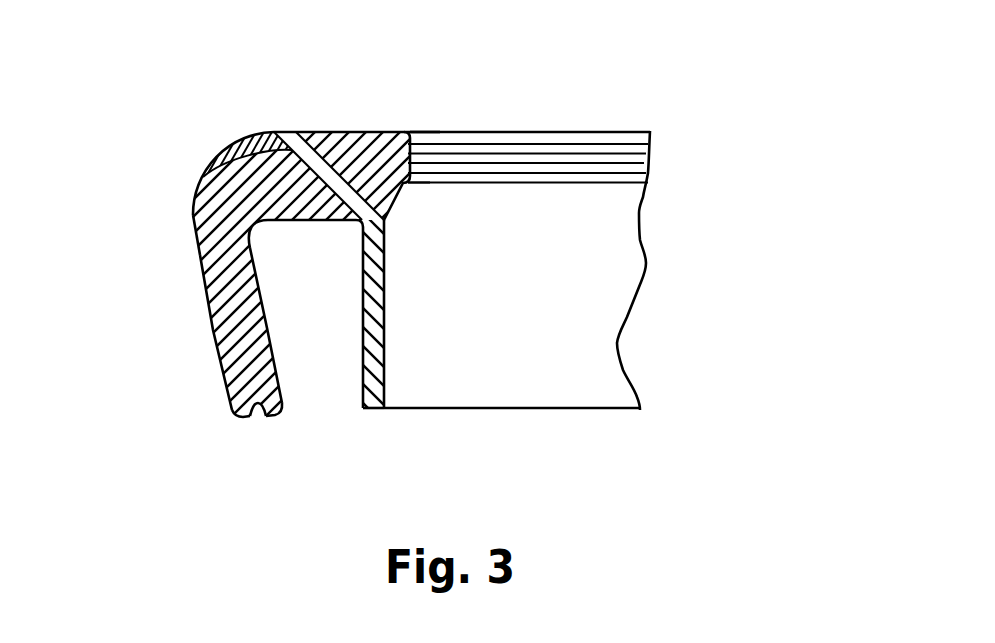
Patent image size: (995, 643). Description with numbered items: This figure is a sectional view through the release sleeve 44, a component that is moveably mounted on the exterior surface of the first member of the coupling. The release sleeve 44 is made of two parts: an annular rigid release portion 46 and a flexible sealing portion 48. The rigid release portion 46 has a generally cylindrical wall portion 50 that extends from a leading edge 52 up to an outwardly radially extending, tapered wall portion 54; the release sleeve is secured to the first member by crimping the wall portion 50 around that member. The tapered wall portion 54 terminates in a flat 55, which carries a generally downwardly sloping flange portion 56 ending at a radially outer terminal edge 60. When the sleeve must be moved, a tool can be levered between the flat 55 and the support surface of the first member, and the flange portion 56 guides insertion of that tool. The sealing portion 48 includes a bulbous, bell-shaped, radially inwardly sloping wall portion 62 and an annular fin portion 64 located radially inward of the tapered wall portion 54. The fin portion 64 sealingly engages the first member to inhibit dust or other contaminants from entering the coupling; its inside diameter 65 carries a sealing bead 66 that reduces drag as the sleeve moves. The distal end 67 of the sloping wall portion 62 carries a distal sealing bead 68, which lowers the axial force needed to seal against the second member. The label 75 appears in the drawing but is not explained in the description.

The release sleeve 44 is at (540, 100).
The rigid release portion 46 is at (390, 287).
The sealing portion 48 is at (190, 194).
The wall portion 50 is at (363, 323).
The leading edge 52 is at (373, 409).
The tapered wall portion 54 is at (338, 155).
The flat 55 is at (286, 131).
The flange portion 56 is at (242, 157).
The terminal edge 60 is at (203, 175).
The inwardly sloping wall portion 62 is at (223, 288).
The fin portion 64 is at (378, 145).
The inside diameter 65 is at (420, 158).
The sealing bead 66 is at (428, 133).
The distal end 67 is at (257, 404).
The distal sealing bead 68 is at (242, 417).
The channel 75 is at (317, 278).